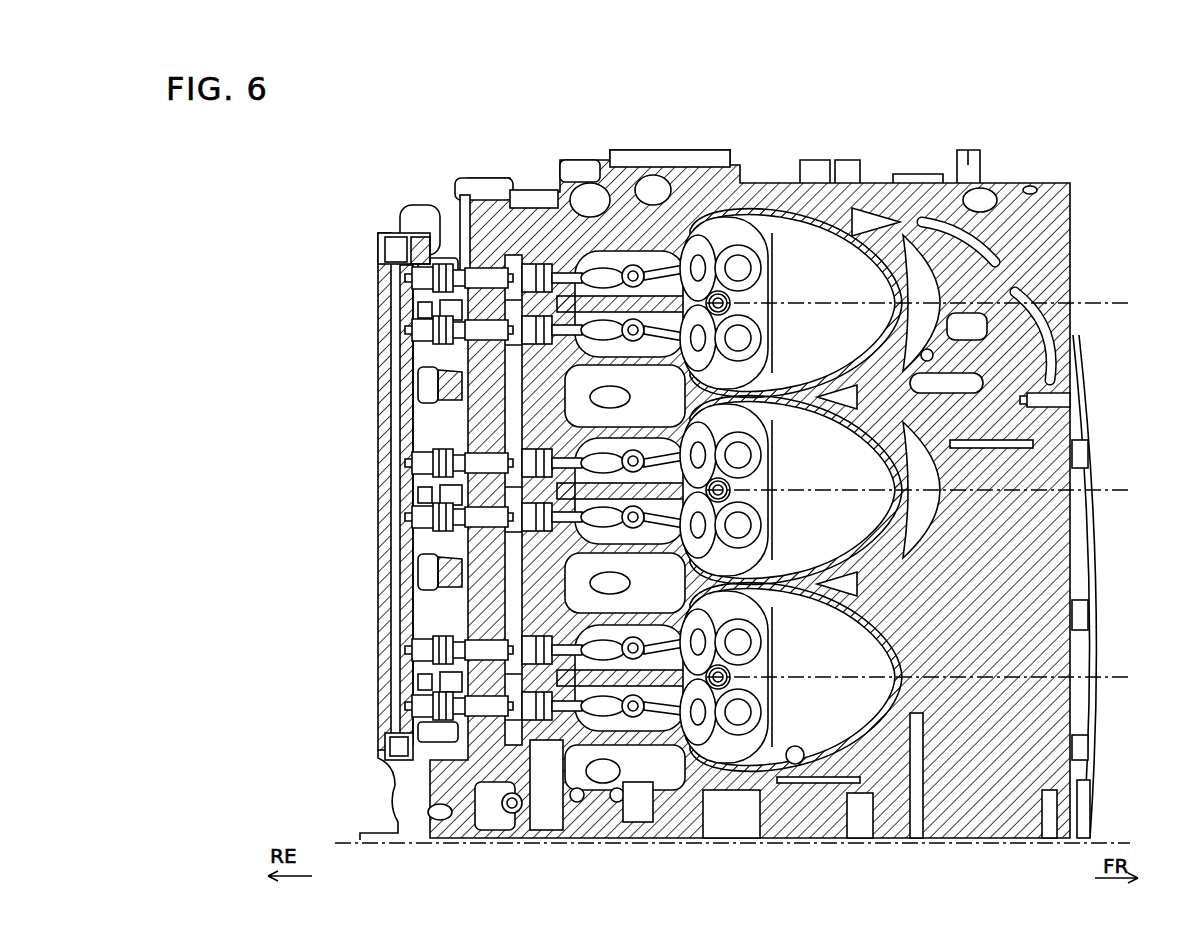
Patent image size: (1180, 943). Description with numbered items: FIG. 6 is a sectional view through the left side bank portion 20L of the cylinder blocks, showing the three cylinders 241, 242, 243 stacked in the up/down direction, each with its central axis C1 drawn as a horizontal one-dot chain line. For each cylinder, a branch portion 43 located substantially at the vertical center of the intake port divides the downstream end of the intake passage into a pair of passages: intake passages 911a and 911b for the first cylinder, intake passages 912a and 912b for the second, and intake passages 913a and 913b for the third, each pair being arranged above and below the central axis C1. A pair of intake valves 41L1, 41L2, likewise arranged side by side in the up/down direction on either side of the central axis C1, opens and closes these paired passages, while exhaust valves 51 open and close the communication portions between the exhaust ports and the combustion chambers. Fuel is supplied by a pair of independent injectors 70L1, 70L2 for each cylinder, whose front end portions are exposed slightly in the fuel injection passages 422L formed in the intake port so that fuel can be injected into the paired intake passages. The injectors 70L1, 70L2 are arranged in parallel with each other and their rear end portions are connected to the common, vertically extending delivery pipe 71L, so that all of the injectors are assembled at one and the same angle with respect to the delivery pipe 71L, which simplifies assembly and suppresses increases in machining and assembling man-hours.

The left side bank portion 20L is at (1063, 221).
The delivery pipe 71L is at (380, 236).
The injector 70L1 is at (483, 278).
The injector 70L2 is at (407, 328).
The fuel injection passage 422L is at (588, 272).
The intake passage 911a is at (592, 275).
The intake passage 911b is at (556, 302).
The intake passage 912a is at (585, 442).
The intake passage 912b is at (590, 527).
The intake passage 913a is at (592, 635).
The intake passage 913b is at (622, 735).
The branch portion 43 is at (645, 262).
The intake valve 41L1 is at (705, 250).
The intake valve 41L2 is at (706, 352).
The exhaust valve 51 is at (747, 265).
The cylinder 241 is at (845, 255).
The cylinder 242 is at (1062, 432).
The cylinder 243 is at (795, 764).
The central axis C1 is at (933, 495).